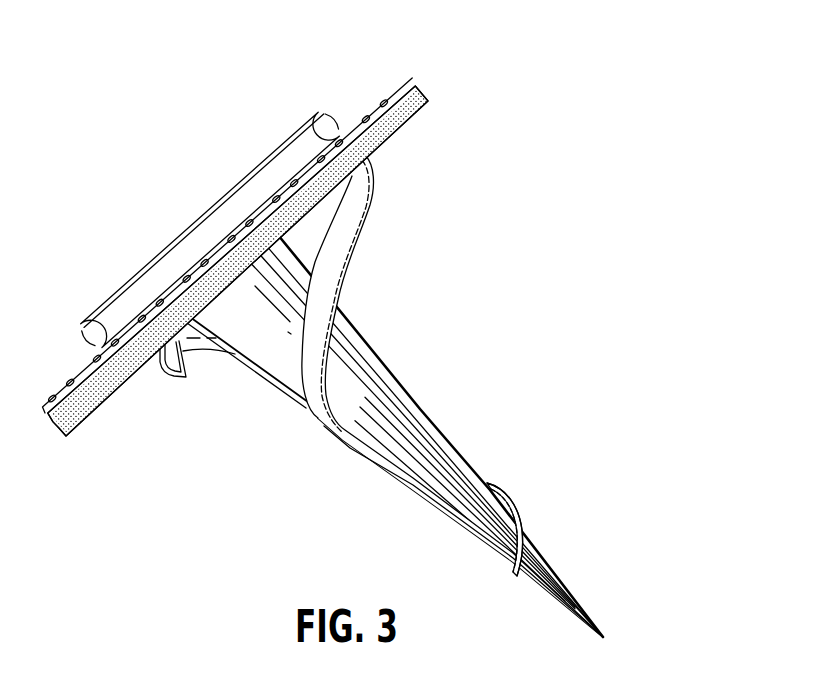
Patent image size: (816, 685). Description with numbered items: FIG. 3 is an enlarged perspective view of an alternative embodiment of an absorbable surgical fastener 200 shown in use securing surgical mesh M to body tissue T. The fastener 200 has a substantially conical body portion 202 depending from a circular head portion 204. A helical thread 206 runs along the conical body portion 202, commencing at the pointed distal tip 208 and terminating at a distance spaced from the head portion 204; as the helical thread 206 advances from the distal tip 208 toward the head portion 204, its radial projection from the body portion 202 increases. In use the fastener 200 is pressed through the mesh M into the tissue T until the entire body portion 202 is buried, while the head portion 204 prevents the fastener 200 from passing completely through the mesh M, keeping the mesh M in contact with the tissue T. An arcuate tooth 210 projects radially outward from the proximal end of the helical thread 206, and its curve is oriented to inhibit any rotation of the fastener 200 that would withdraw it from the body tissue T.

The surgical fastener 200 is at (566, 243).
The conical body portion 202 is at (421, 408).
The circular head portion 204 is at (273, 152).
The helical thread 206 is at (342, 250).
The pointed distal tip 208 is at (521, 513).
The arcuate tooth 210 is at (170, 374).
The surgical mesh M is at (411, 85).
The body tissue T is at (430, 106).